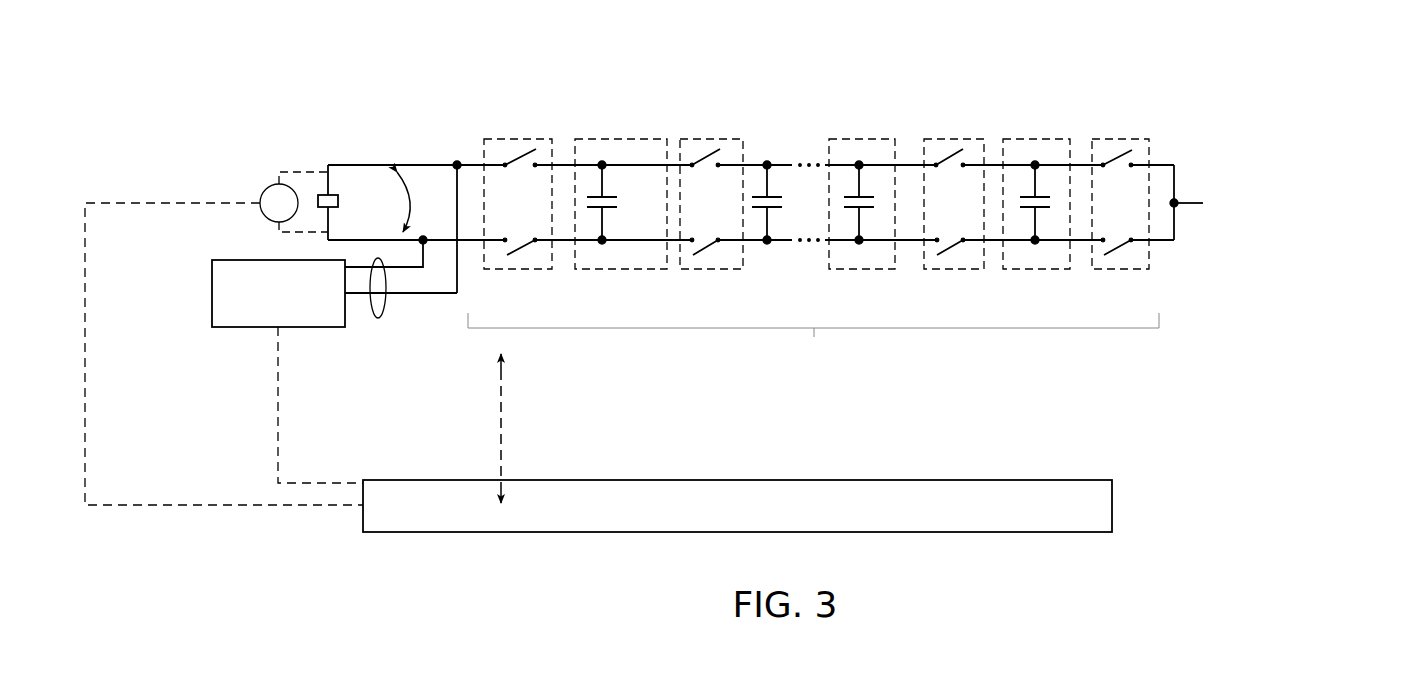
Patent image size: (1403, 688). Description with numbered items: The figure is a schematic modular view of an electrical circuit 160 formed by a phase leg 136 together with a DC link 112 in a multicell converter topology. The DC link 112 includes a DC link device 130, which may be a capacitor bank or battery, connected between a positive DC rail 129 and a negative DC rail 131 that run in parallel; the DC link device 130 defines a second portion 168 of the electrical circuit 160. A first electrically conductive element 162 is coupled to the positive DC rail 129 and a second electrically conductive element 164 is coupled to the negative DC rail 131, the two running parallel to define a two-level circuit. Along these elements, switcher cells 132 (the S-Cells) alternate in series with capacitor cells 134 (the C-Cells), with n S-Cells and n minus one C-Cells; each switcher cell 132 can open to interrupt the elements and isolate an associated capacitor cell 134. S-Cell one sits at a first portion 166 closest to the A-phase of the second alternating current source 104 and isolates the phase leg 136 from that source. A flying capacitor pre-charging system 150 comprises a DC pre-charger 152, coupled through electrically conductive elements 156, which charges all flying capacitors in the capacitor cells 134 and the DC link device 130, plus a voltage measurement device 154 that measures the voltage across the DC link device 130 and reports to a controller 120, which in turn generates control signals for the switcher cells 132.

The second alternating current source 104 is at (1327, 200).
The DC link 112 is at (365, 145).
The controller 120 is at (719, 520).
The positive DC rail 129 is at (347, 163).
The DC link device 130 is at (320, 196).
The negative DC rail 131 is at (403, 242).
The switcher cell 132 is at (519, 148).
The capacitor cell 134 is at (607, 155).
The phase leg 136 is at (798, 150).
The flying capacitor pre-charging system 150 is at (247, 228).
The DC pre-charger 152 is at (240, 327).
The voltage measurement device 154 is at (262, 190).
The electrically conductive elements 156 is at (378, 318).
The electrical circuit 160 is at (717, 57).
The first electrically conductive element 162 is at (1166, 155).
The second electrically conductive element 164 is at (1168, 247).
The first portion 166 is at (1142, 117).
The second portion 168 is at (268, 80).